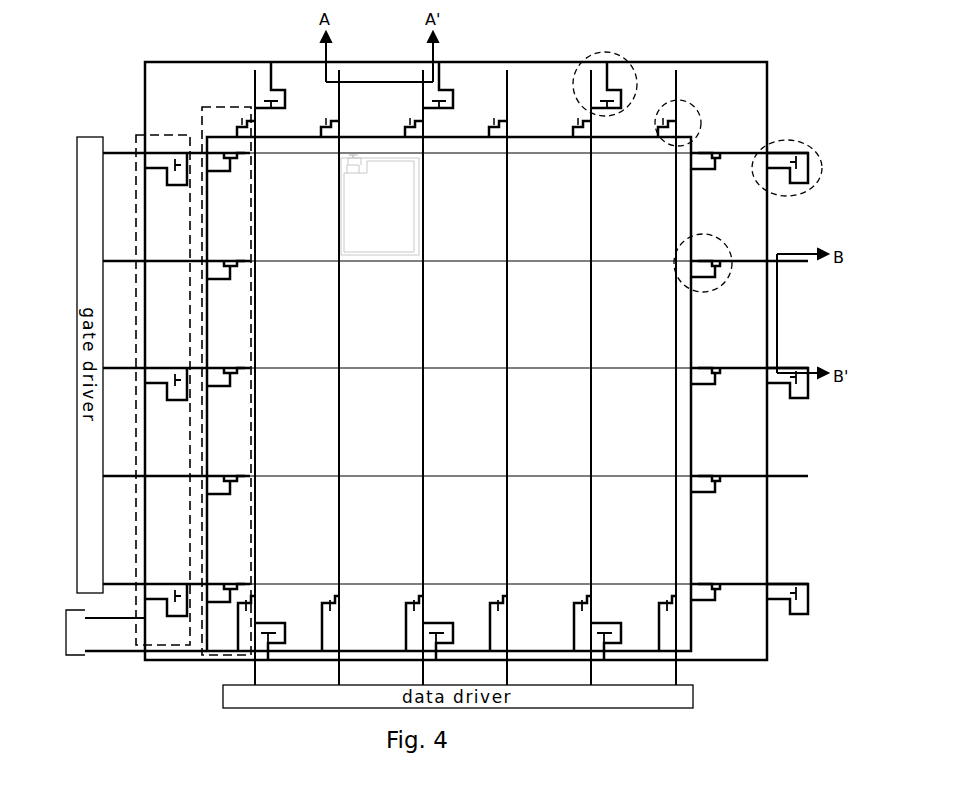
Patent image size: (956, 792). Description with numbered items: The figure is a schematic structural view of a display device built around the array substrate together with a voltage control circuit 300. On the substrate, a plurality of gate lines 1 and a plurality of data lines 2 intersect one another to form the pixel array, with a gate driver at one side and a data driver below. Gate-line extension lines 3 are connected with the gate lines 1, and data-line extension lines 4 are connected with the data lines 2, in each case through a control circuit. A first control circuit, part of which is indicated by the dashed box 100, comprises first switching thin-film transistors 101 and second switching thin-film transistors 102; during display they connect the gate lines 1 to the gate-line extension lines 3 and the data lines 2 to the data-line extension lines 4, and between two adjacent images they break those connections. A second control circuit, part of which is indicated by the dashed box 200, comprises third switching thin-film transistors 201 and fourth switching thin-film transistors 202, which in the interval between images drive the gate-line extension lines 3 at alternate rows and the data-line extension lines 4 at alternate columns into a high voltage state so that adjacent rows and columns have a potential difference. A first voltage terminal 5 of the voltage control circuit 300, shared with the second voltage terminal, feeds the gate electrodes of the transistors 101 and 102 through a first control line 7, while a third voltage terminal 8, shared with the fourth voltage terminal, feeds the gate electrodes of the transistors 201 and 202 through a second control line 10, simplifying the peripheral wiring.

The gate line 1 is at (360, 152).
The data line 2 is at (339, 207).
The gate-line extension line 3 is at (121, 152).
The data-line extension line 4 is at (339, 84).
The first voltage terminal 5 is at (145, 665).
The first control line 7 is at (693, 523).
The third voltage terminal 8 is at (115, 631).
The second control line 10 is at (768, 508).
The first control circuit 100 is at (217, 105).
The first switching thin-film transistor 101 is at (710, 295).
The second switching thin-film transistor 102 is at (692, 103).
The second control circuit 200 is at (158, 133).
The third switching thin-film transistor 201 is at (812, 192).
The fourth switching thin-film transistor 202 is at (610, 52).
The voltage control circuit 300 is at (66, 632).